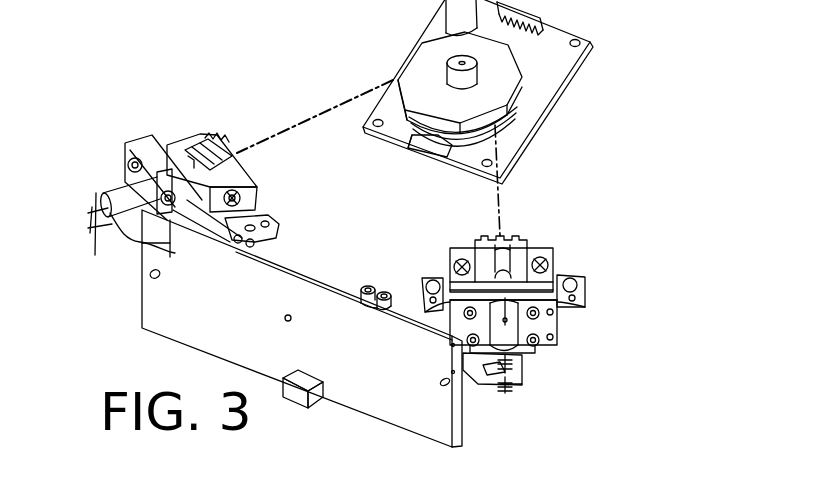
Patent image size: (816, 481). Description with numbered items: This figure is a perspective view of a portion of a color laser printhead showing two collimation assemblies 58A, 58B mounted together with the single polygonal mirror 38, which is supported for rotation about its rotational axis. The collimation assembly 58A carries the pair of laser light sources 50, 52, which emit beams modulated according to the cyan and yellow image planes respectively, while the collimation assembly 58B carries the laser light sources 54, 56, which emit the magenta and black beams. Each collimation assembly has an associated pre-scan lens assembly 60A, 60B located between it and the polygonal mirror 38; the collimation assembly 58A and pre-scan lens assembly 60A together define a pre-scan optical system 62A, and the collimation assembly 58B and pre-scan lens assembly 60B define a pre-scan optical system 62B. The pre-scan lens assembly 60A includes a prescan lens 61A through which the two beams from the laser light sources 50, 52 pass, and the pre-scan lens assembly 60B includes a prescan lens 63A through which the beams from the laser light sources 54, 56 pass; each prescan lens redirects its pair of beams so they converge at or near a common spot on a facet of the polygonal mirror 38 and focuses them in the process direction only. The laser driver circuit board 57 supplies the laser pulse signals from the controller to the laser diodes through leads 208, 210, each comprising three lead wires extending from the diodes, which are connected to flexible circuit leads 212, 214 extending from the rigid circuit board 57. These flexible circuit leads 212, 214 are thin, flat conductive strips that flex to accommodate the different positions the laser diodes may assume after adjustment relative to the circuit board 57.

The polygonal mirror 38 is at (507, 73).
The laser light source 50 is at (522, 346).
The laser light source 52 is at (523, 372).
The laser light source 54 is at (125, 186).
The laser light source 56 is at (165, 232).
The laser driver circuit board 57 is at (160, 317).
The collimation assembly 58A is at (615, 310).
The collimation assembly 58B is at (118, 121).
The pre-scan lens assembly 60A is at (523, 216).
The pre-scan lens assembly 60B is at (204, 112).
The prescan lens 61A is at (507, 250).
The pre-scan optical system 62A is at (592, 246).
The pre-scan optical system 62B is at (150, 102).
The prescan lens 63A is at (225, 152).
The lead 208 is at (522, 369).
The lead 210 is at (497, 372).
The flexible circuit lead 212 is at (523, 354).
The flexible circuit lead 214 is at (517, 388).